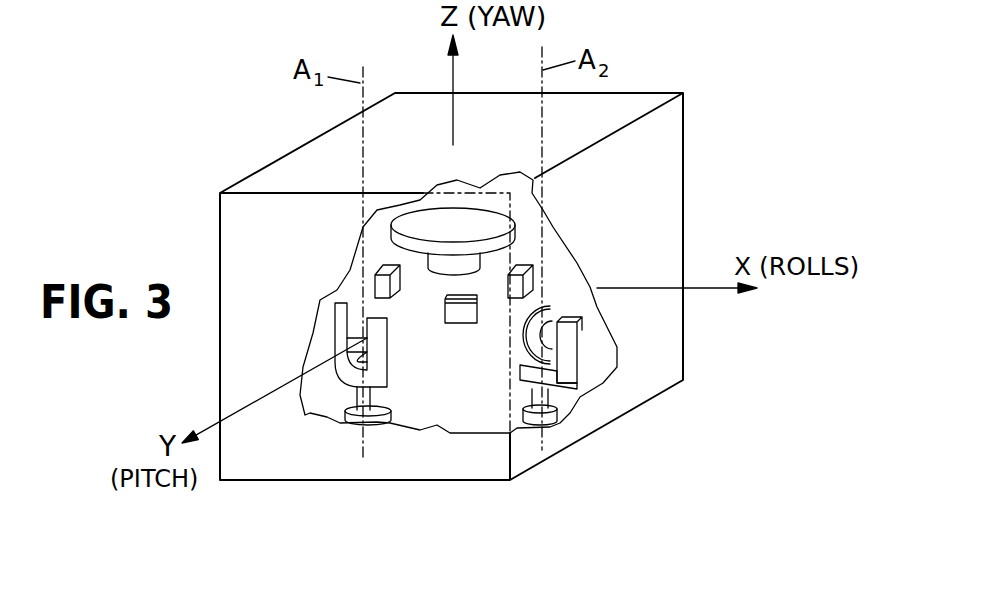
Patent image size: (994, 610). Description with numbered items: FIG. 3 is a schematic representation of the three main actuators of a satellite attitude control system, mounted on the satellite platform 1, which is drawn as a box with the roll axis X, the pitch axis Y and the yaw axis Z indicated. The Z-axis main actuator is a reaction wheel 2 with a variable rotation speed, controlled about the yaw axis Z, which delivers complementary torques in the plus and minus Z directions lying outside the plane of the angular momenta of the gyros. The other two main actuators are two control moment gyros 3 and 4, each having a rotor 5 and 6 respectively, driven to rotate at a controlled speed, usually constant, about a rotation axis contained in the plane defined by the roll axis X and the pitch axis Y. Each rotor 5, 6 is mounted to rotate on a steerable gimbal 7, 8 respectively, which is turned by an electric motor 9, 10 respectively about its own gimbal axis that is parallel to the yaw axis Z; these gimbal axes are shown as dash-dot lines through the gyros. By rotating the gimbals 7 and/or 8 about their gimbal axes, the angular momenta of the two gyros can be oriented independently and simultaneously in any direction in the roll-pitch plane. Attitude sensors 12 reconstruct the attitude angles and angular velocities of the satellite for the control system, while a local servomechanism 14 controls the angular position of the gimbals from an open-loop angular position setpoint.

The platform 1 is at (672, 148).
The reaction wheel 2 is at (462, 220).
The control moment gyro 3 is at (360, 407).
The control moment gyro 4 is at (603, 336).
The rotor 5 is at (380, 335).
The rotor 6 is at (546, 307).
The steerable gimbal 7 is at (338, 333).
The steerable gimbal 8 is at (573, 335).
The electric motor 9 is at (381, 412).
The electric motor 10 is at (529, 422).
The attitude sensors 12 is at (378, 271).
The local servomechanism 14 is at (460, 323).